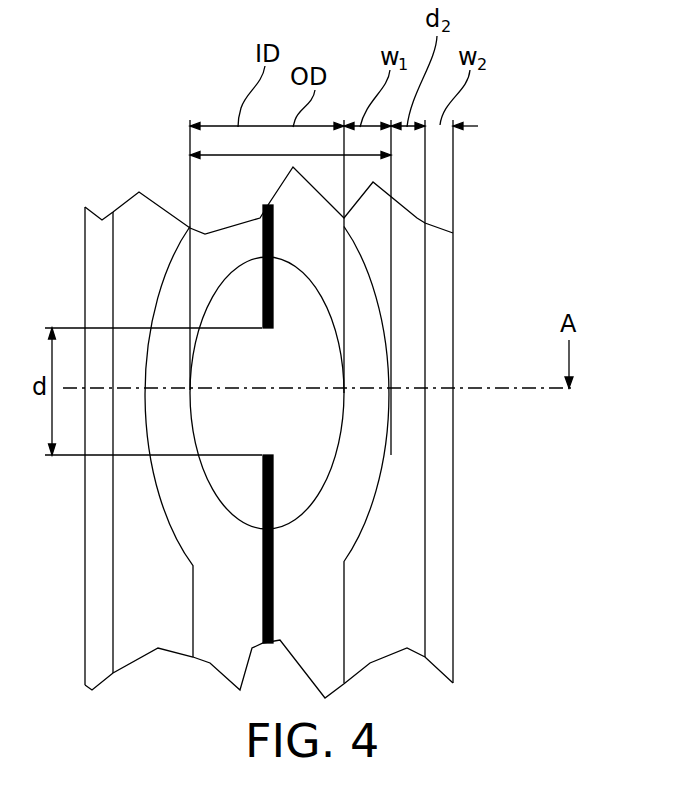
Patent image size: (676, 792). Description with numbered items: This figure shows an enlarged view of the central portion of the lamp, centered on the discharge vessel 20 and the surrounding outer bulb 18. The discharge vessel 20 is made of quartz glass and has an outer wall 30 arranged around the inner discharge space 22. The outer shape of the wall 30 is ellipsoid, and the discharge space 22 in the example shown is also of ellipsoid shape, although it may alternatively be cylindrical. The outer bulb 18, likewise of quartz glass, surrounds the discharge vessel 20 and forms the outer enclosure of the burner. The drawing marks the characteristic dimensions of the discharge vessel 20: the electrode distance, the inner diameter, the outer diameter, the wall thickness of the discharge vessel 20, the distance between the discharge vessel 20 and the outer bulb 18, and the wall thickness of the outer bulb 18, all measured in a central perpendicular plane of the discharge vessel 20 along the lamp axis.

The outer bulb 18 is at (442, 362).
The discharge vessel 20 is at (486, 259).
The discharge space 22 is at (232, 473).
The outer wall 30 is at (368, 495).